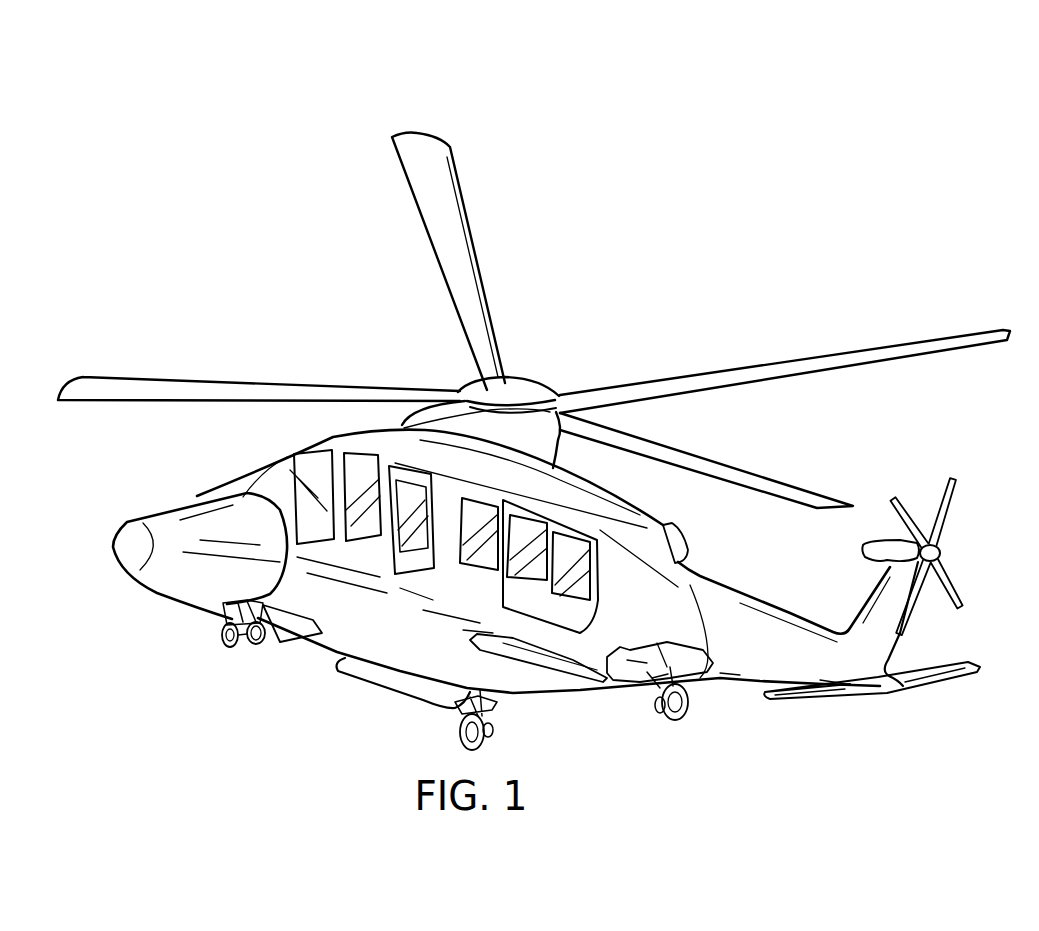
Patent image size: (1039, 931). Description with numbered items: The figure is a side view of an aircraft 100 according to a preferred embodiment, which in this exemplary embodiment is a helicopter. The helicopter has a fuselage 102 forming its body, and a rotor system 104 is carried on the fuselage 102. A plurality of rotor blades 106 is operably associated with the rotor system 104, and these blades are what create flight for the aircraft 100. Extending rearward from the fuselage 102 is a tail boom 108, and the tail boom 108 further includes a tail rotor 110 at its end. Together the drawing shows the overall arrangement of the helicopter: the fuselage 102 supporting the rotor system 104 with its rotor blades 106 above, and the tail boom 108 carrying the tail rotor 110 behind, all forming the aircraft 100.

The aircraft 100 is at (207, 123).
The fuselage 102 is at (330, 645).
The rotor system 104 is at (543, 356).
The rotor blades 106 is at (767, 378).
The tail boom 108 is at (739, 674).
The tail rotor 110 is at (944, 525).